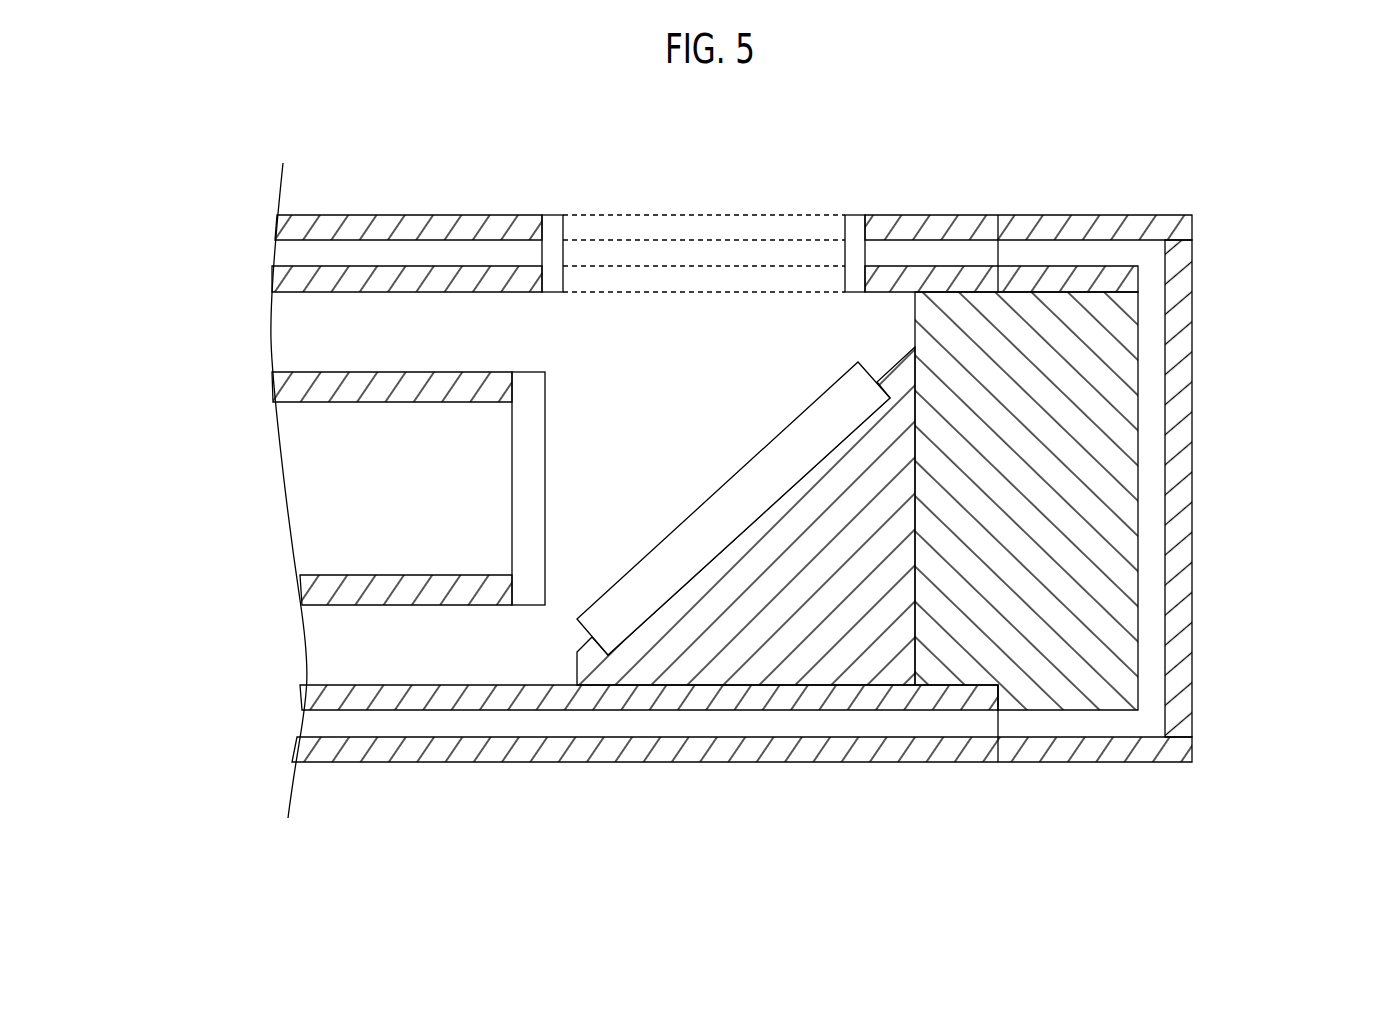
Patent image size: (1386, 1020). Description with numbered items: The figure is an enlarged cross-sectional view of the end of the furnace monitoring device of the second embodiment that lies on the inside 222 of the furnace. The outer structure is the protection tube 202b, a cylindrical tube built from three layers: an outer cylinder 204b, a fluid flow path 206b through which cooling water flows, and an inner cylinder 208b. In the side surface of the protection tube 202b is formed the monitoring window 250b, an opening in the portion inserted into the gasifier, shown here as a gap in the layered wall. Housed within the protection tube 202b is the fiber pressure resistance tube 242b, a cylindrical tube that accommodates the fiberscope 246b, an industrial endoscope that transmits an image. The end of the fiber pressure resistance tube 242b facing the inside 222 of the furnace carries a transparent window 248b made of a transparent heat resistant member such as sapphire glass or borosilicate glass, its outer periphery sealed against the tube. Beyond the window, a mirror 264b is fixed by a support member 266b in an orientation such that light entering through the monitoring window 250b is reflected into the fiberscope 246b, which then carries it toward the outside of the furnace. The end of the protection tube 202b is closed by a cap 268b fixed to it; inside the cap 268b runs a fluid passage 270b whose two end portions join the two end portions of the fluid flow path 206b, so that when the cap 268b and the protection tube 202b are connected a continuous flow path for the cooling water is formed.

The protection tube 202b is at (732, 553).
The outer cylinder 204b is at (883, 752).
The fluid flow path 206b is at (855, 722).
The inner cylinder 208b is at (825, 697).
The inside of the furnace 222 is at (1358, 543).
The fiber pressure resistance tube 242b is at (327, 618).
The fiberscope 246b is at (392, 533).
The transparent window 248b is at (530, 588).
The monitoring window 250b is at (845, 202).
The mirror 264b is at (590, 621).
The support member 266b is at (697, 650).
The cap 268b is at (782, 517).
The fluid passage 270b is at (1053, 439).